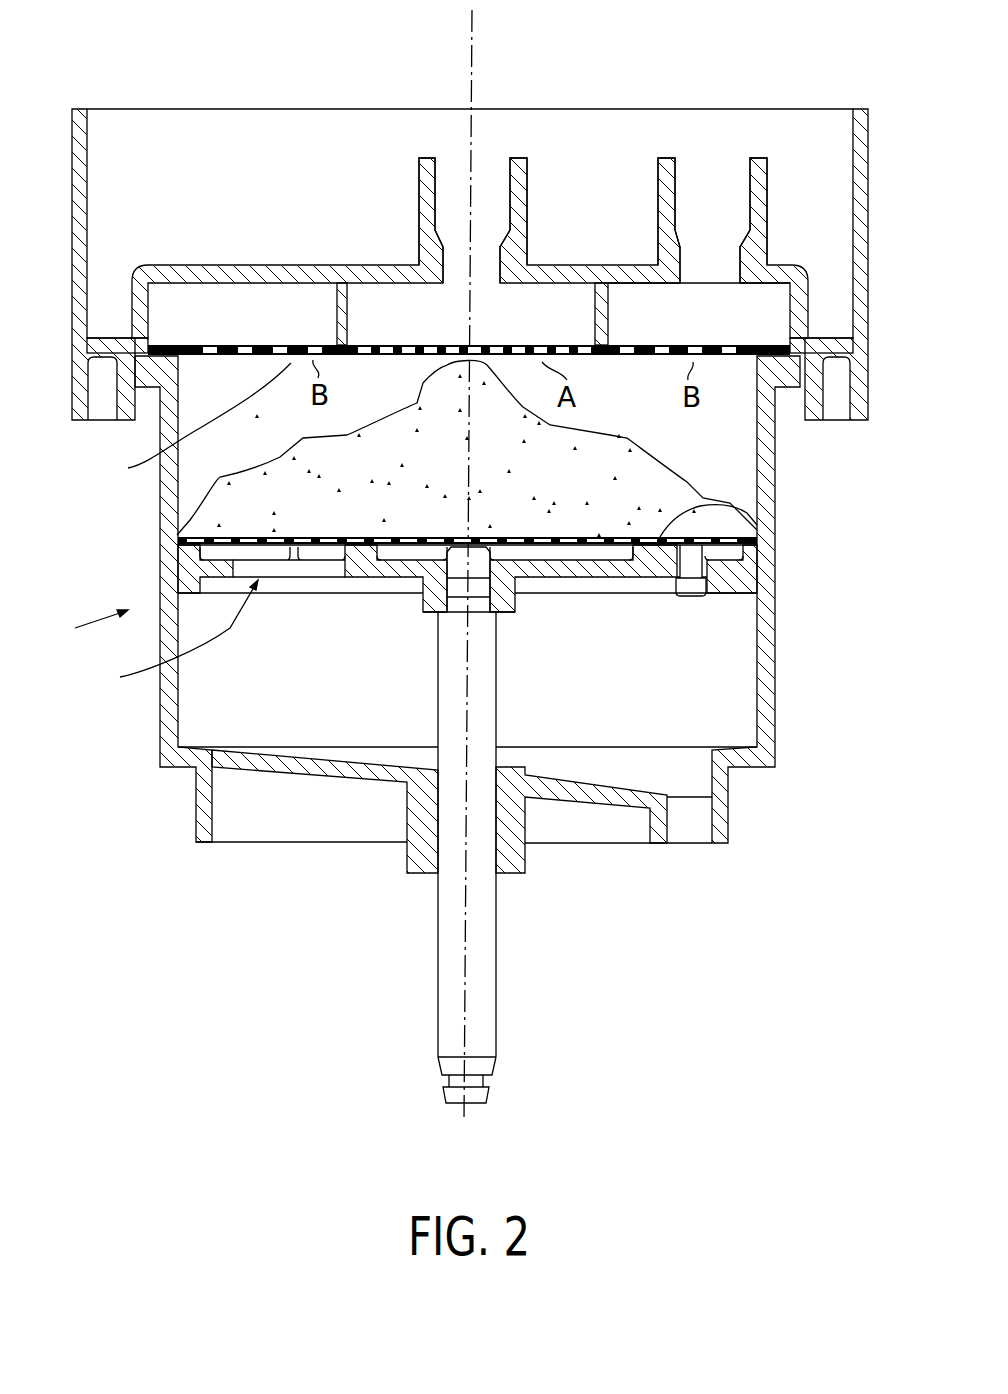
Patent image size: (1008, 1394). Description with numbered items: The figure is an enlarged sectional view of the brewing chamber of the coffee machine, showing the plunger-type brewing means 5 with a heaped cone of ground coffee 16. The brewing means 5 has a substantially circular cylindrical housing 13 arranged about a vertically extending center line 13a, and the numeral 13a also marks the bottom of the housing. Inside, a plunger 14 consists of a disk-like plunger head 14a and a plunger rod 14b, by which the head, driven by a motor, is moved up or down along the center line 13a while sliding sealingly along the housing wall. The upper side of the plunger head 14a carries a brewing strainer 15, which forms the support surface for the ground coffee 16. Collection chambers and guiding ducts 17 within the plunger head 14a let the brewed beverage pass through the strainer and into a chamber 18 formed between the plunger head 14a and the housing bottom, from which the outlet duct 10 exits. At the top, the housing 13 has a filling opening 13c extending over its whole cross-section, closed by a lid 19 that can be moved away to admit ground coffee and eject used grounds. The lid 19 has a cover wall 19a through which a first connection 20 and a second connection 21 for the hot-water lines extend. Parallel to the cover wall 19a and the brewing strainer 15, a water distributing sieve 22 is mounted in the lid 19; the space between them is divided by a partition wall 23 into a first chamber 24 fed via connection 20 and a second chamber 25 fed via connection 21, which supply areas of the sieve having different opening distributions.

The brewing means 5 is at (89, 627).
The outlet duct 10 is at (686, 835).
The cylinder housing 13 is at (767, 622).
The center line 13a is at (473, 32).
The filling opening 13c is at (182, 423).
The plunger 14 is at (187, 565).
The plunger head 14a is at (748, 567).
The plunger rod 14b is at (447, 947).
The brewing strainer 15 is at (746, 513).
The ground coffee 16 is at (437, 476).
The collection chambers and guiding ducts 17 is at (171, 638).
The chamber 18 is at (640, 691).
The lid 19 is at (866, 270).
The cover wall 19a is at (226, 264).
The first connection 20 is at (420, 207).
The second connection 21 is at (762, 207).
The water distributing sieve 22 is at (242, 370).
The partition wall 23 is at (338, 312).
The first chamber 24 is at (552, 331).
The second chamber 25 is at (720, 331).